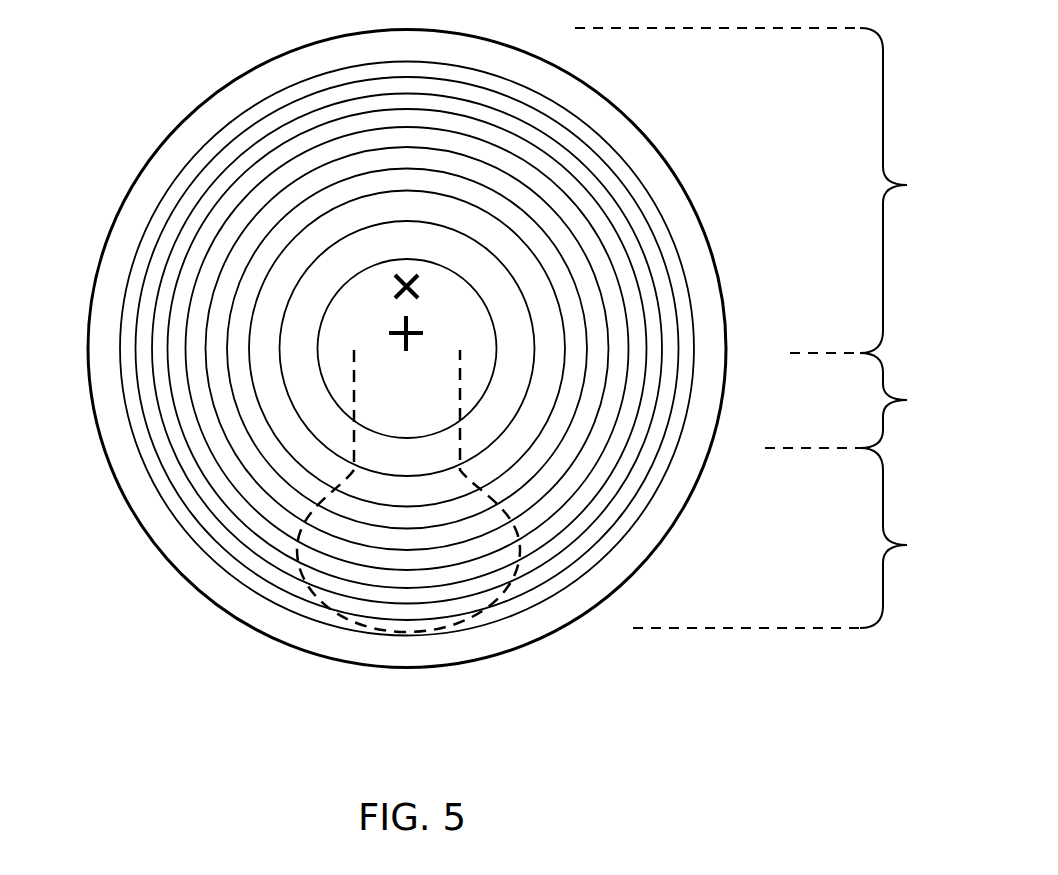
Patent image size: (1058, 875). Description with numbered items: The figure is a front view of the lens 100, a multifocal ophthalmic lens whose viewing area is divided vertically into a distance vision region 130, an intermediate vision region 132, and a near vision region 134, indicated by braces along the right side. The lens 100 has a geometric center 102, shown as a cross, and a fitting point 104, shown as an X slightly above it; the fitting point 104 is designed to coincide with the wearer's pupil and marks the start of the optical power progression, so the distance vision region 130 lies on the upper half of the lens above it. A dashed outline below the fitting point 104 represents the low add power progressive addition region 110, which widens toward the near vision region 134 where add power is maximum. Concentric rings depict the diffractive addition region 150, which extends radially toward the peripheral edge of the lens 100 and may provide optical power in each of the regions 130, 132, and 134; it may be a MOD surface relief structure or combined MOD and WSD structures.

The lens 100 is at (118, 105).
The geometric center 102 is at (411, 328).
The fitting point 104 is at (405, 274).
The low add power progressive addition region 110 is at (458, 402).
The distance vision region 130 is at (766, 190).
The intermediate vision region 132 is at (861, 400).
The near vision region 134 is at (795, 538).
The diffractive addition region 150 is at (297, 127).